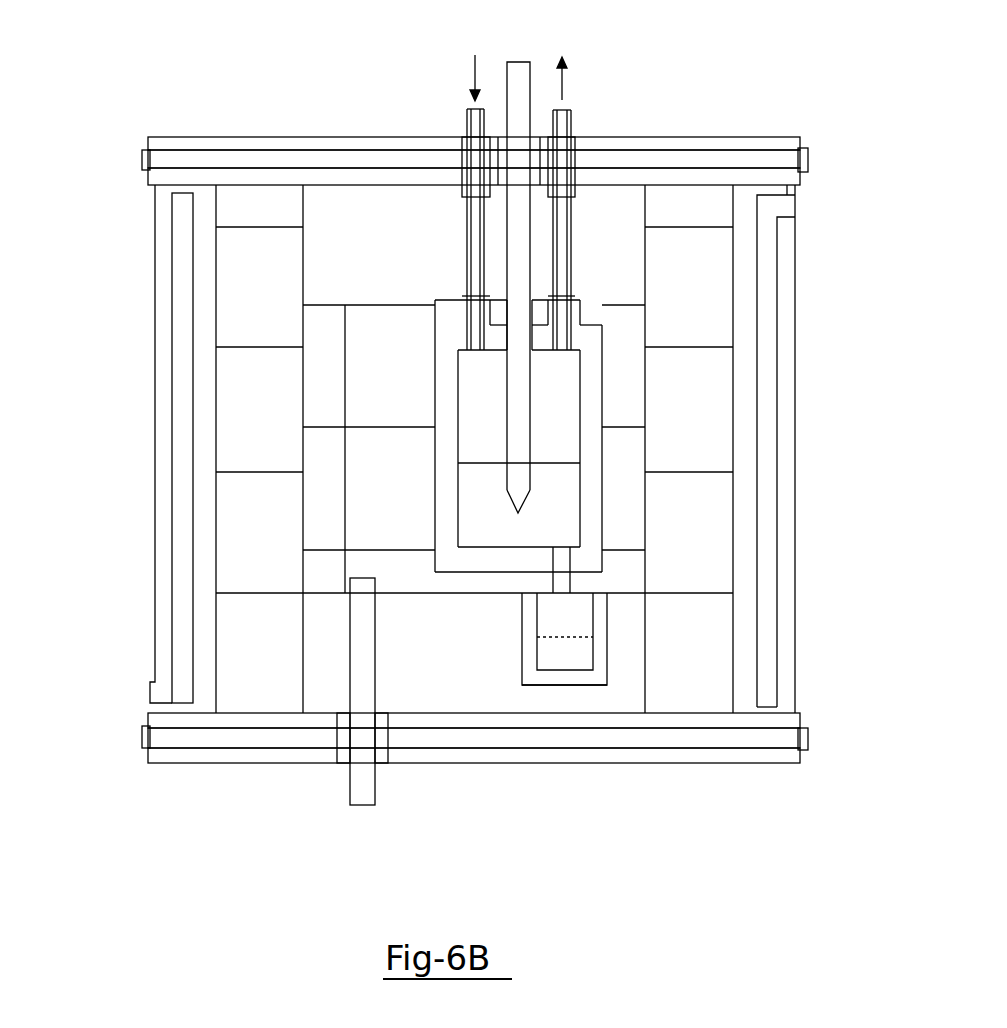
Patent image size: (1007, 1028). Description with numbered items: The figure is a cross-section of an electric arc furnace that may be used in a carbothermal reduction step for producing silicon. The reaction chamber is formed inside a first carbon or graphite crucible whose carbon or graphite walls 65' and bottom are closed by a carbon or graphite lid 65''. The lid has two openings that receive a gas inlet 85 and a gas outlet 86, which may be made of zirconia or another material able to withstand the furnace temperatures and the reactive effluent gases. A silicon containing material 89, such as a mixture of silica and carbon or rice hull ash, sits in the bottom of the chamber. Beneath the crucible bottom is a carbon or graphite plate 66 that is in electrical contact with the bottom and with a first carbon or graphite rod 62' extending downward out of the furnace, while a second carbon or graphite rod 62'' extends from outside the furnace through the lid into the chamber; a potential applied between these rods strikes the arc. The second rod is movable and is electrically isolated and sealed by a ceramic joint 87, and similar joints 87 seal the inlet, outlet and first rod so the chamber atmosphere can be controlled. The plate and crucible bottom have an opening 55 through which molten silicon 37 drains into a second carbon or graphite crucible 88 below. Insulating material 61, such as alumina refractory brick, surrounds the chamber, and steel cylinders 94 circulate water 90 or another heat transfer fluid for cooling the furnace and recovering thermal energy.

The water 90 is at (168, 158).
The steel cylinders 94 is at (195, 175).
The insulating material 61 is at (392, 197).
The carbon or graphite plate 66 is at (312, 572).
The carbon or graphite walls 65' is at (583, 471).
The carbon or graphite lid 65'' is at (518, 356).
The silicon containing material 89 is at (478, 475).
The second carbon or graphite rod 62'' is at (518, 262).
The first carbon or graphite rod 62' is at (366, 722).
The gas inlet 85 is at (470, 127).
The gas outlet 86 is at (573, 120).
The ceramic joint 87 is at (553, 195).
The opening 55 is at (560, 585).
The molten silicon 37 is at (587, 660).
The second carbon or graphite crucible 88 is at (560, 685).